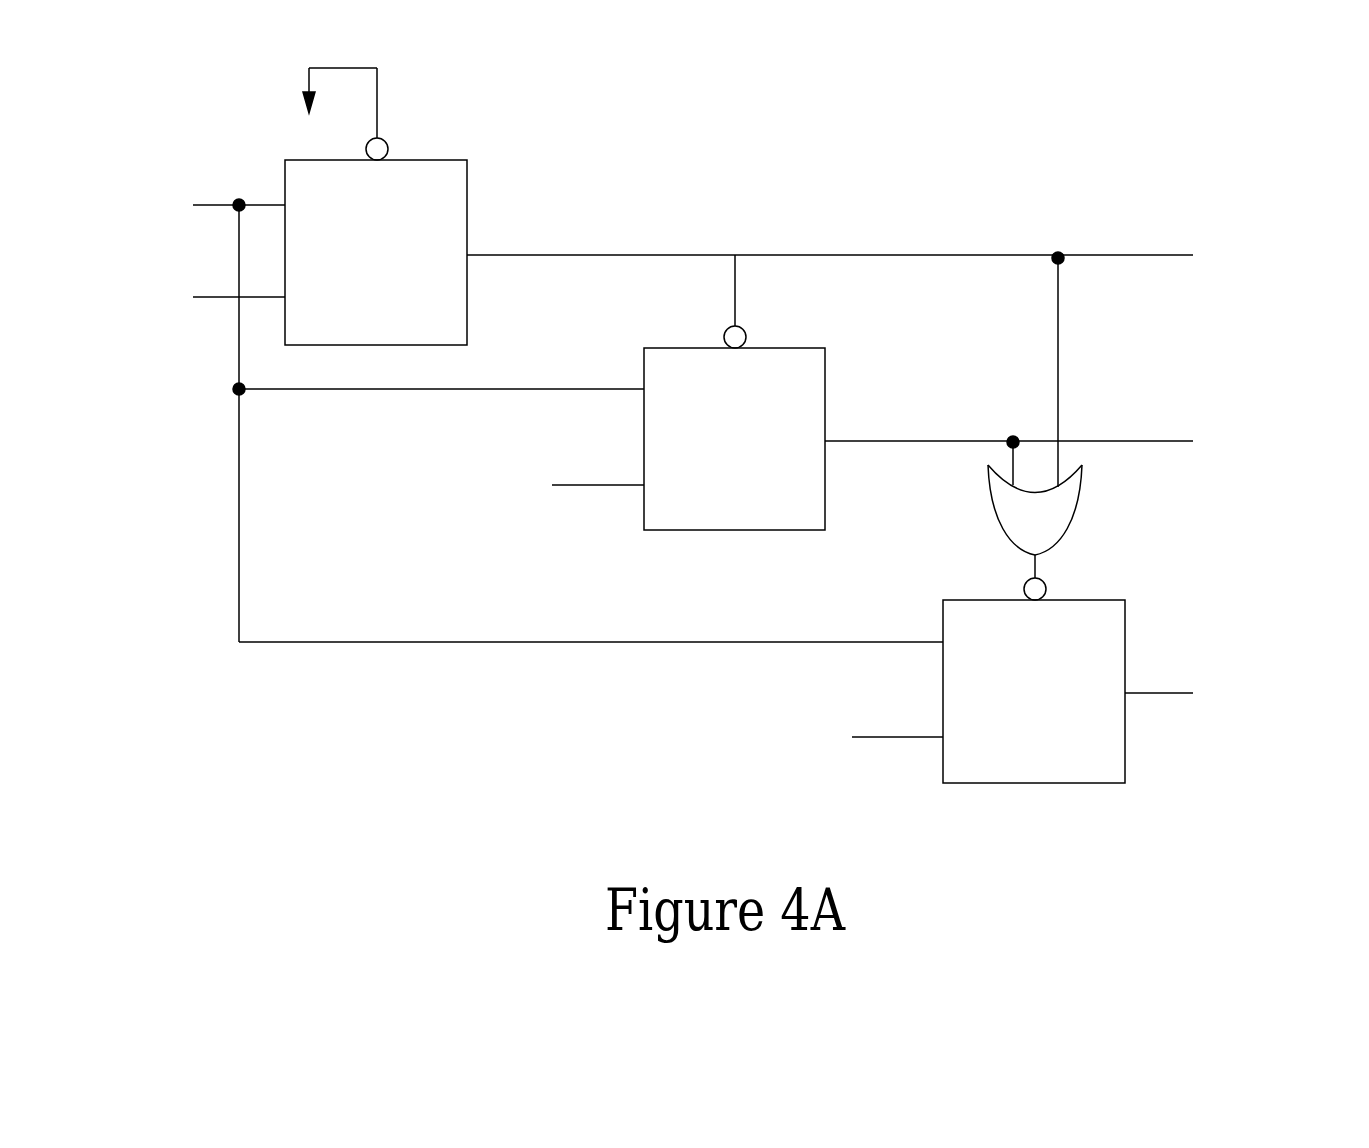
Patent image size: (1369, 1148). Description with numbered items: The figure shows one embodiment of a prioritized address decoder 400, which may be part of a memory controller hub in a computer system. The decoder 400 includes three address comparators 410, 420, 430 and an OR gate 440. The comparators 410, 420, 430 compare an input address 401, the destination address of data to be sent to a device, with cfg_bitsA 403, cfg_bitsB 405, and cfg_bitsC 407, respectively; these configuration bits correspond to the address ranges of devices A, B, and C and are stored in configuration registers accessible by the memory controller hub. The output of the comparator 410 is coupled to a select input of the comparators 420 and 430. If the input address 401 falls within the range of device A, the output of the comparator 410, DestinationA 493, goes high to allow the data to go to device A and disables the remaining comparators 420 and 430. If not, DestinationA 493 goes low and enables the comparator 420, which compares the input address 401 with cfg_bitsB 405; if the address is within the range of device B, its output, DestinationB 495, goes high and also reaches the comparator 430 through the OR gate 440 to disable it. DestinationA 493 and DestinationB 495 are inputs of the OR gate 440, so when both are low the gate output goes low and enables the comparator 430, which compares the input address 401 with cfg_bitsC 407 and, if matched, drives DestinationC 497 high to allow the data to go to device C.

The prioritized address decoder 400 is at (1050, 127).
The input address 401 is at (509, 407).
The cfg_bitsA 403 is at (165, 294).
The cfg_bitsB 405 is at (534, 475).
The cfg_bitsC 407 is at (826, 727).
The comparator 410 is at (376, 206).
The comparator 420 is at (734, 392).
The comparator 430 is at (1034, 669).
The OR gate 440 is at (1035, 407).
The DestinationA 493 is at (907, 262).
The DestinationB 495 is at (1090, 445).
The DestinationC 497 is at (1241, 694).